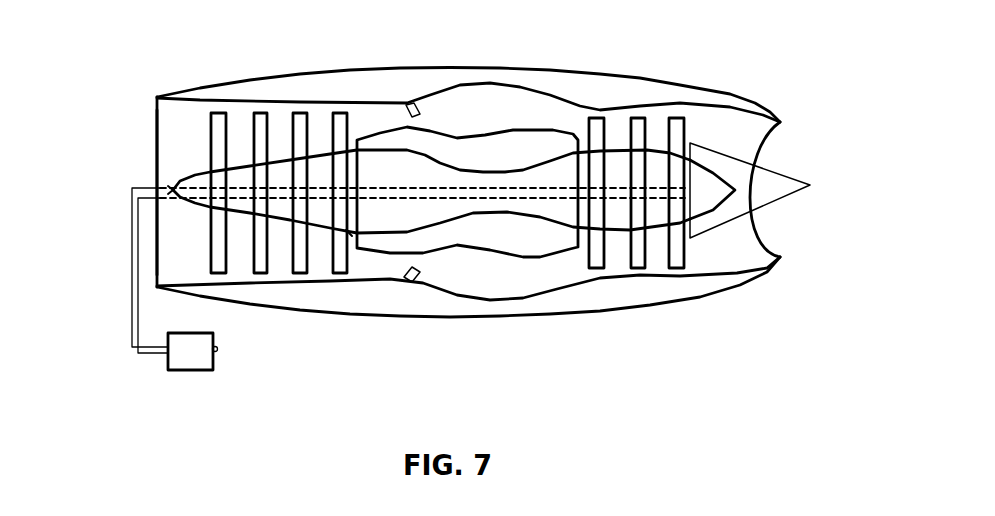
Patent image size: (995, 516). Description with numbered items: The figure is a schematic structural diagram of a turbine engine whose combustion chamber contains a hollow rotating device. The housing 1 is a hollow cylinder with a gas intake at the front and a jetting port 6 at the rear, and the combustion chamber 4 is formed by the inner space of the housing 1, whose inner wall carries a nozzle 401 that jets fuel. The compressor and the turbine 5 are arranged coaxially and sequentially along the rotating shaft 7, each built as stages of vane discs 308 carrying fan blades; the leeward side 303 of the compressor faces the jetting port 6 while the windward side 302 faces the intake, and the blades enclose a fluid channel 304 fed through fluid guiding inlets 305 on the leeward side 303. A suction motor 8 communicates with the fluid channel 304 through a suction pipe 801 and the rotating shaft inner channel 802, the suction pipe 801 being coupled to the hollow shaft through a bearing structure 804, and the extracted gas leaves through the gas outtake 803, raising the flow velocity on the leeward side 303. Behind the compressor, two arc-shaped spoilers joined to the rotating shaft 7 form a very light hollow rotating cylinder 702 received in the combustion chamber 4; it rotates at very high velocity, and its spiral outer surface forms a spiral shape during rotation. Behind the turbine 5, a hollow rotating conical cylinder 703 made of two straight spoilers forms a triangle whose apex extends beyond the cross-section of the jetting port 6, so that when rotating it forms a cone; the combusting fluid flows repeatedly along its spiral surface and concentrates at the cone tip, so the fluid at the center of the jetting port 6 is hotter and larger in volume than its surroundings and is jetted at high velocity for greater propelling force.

The housing 1 is at (468, 169).
The combustion chamber 4 is at (468, 160).
The turbine 5 is at (589, 144).
The jetting port 6 is at (761, 180).
The rotating shaft 7 is at (431, 259).
The hollow rotating cylinder 702 is at (532, 252).
The hollow rotating conical cylinder 703 is at (729, 266).
The nozzle 401 is at (477, 318).
The windward side 302 is at (205, 161).
The leeward side 303 is at (288, 148).
The fluid channel 304 is at (164, 148).
The fluid guiding inlet 305 is at (320, 255).
The vane disc 308 is at (136, 223).
The suction motor 8 is at (158, 365).
The suction pipe 801 is at (115, 270).
The rotating shaft inner channel 802 is at (447, 313).
The gas outtake 803 is at (258, 372).
The bearing structure 804 is at (138, 163).